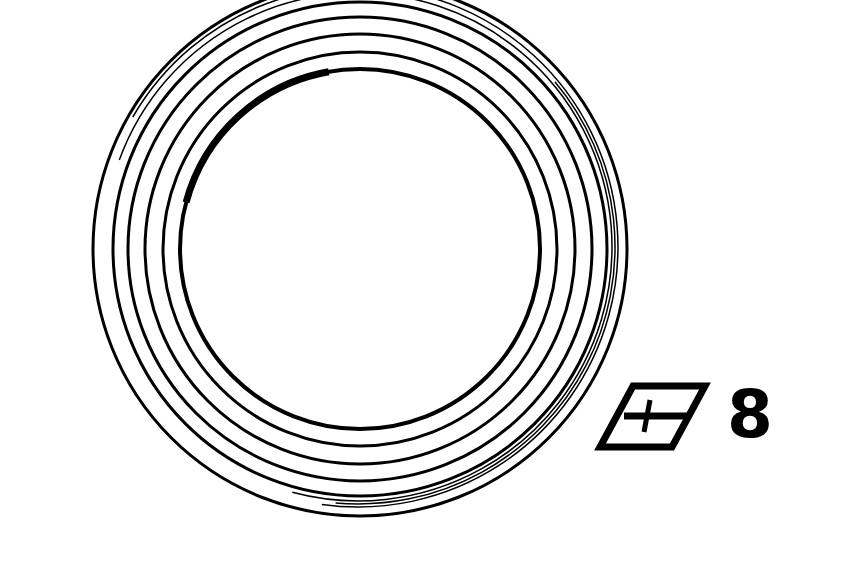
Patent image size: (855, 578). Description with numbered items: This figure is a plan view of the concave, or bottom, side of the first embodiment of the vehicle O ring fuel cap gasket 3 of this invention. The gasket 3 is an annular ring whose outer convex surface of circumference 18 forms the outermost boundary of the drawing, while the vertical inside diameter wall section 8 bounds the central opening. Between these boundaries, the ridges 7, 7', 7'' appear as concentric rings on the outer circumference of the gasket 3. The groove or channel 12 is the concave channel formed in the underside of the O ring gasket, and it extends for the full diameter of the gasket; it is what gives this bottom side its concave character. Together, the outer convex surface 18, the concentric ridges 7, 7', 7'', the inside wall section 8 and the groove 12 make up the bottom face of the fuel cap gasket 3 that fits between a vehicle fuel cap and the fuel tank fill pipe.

The outer convex surface of circumference 18 is at (107, 164).
The vehicle O ring fuel cap gasket 3 is at (498, 33).
The ridge on outer circumference 7 is at (367, 249).
The ridge on outer circumference 7' is at (391, 249).
The ridge on outer circumference 7'' is at (414, 249).
The vertical inside diameter wall section 8 is at (467, 100).
The groove or channel 12 is at (262, 83).